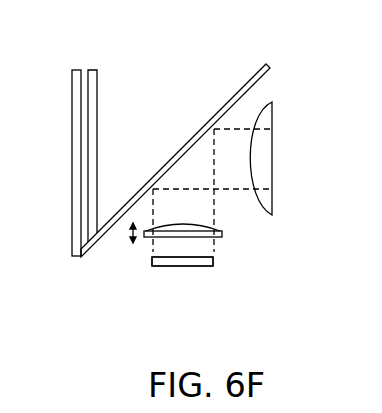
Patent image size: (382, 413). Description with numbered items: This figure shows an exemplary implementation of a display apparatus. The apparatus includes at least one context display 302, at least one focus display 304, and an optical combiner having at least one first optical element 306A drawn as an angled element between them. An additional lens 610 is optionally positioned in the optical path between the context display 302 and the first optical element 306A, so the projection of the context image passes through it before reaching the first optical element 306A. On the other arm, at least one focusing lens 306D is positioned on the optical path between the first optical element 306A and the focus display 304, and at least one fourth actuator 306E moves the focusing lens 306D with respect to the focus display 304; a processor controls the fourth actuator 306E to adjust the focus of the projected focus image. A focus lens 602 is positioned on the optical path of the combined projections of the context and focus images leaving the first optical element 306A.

The context display 302 is at (54, 141).
The additional lens 610 is at (112, 134).
The first optical element 306A is at (175, 140).
The focus lens 602 is at (293, 176).
The focusing lens 306D is at (211, 231).
The fourth actuator 306E is at (210, 267).
The focus display 304 is at (176, 289).